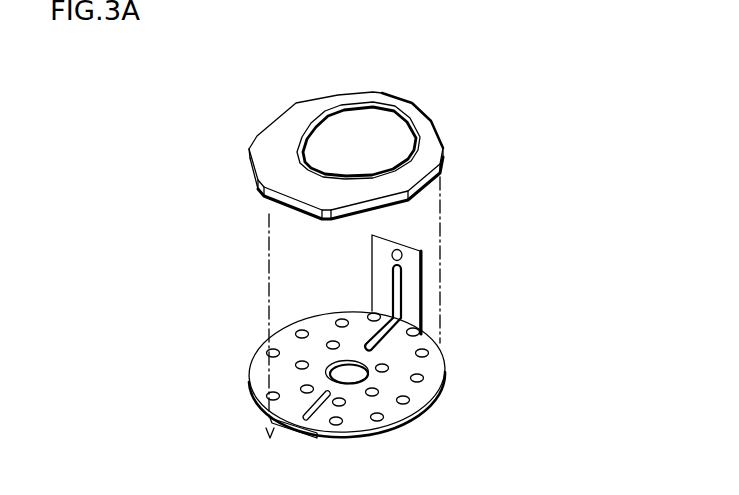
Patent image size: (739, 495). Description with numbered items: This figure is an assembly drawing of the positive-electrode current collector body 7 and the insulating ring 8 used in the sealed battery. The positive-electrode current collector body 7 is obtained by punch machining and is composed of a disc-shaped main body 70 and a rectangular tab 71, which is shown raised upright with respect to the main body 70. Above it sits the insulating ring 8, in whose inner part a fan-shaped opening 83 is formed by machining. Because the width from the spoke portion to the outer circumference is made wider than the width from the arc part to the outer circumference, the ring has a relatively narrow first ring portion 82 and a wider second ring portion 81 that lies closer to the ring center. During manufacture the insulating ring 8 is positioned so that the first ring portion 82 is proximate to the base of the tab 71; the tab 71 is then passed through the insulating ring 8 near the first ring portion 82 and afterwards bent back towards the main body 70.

The positive-electrode current collector body 7 is at (512, 358).
The insulating ring 8 is at (445, 82).
The main body 70 is at (412, 420).
The tab 71 is at (415, 276).
The second ring portion 81 is at (270, 167).
The first ring portion 82 is at (420, 117).
The fan-shaped opening 83 is at (344, 129).